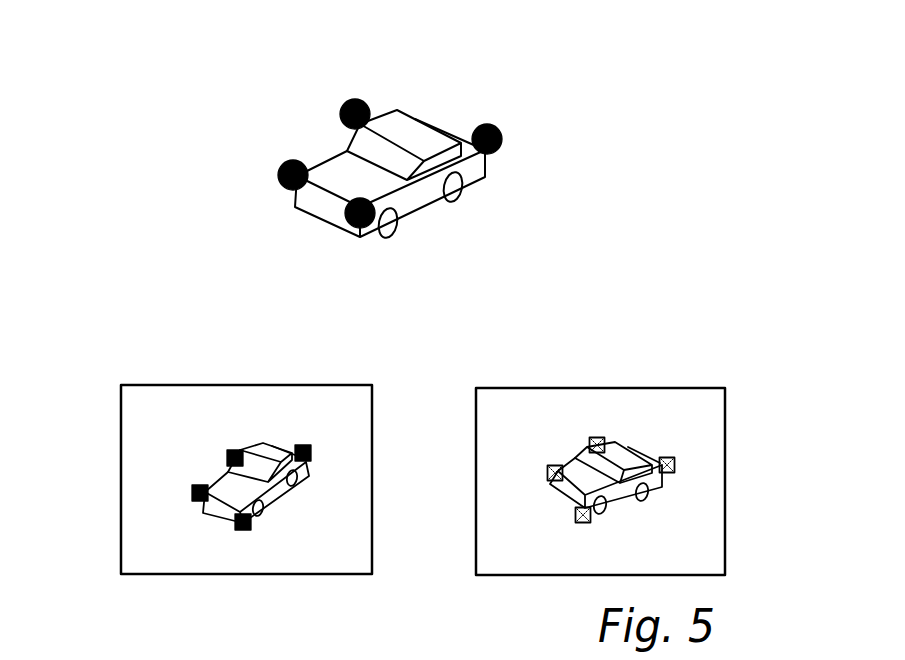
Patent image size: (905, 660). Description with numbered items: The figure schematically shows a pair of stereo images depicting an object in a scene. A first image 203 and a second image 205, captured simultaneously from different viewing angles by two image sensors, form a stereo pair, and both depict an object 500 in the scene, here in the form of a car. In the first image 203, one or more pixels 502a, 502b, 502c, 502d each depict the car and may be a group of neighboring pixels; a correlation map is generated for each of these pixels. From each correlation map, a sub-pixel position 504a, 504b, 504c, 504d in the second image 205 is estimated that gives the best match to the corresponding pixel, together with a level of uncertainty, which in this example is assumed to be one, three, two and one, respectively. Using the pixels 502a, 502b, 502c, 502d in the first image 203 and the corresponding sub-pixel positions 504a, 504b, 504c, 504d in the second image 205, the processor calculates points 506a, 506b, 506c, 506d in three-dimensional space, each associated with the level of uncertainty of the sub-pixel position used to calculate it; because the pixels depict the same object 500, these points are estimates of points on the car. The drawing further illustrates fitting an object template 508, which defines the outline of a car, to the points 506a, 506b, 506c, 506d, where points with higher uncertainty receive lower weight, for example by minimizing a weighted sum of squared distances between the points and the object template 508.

The first image 203 is at (121, 521).
The second image 205 is at (725, 518).
The object 500 is at (260, 458).
The pixel 502a is at (193, 490).
The pixel 502b is at (238, 452).
The pixel 502c is at (241, 530).
The pixel 502d is at (311, 455).
The sub-pixel position 504a is at (548, 472).
The sub-pixel position 504b is at (598, 438).
The sub-pixel position 504c is at (582, 523).
The sub-pixel position 504d is at (676, 468).
The point in three-dimensional space 506a is at (280, 174).
The point in three-dimensional space 506b is at (367, 101).
The point in three-dimensional space 506c is at (368, 226).
The point in three-dimensional space 506d is at (500, 142).
The object template 508 is at (402, 136).